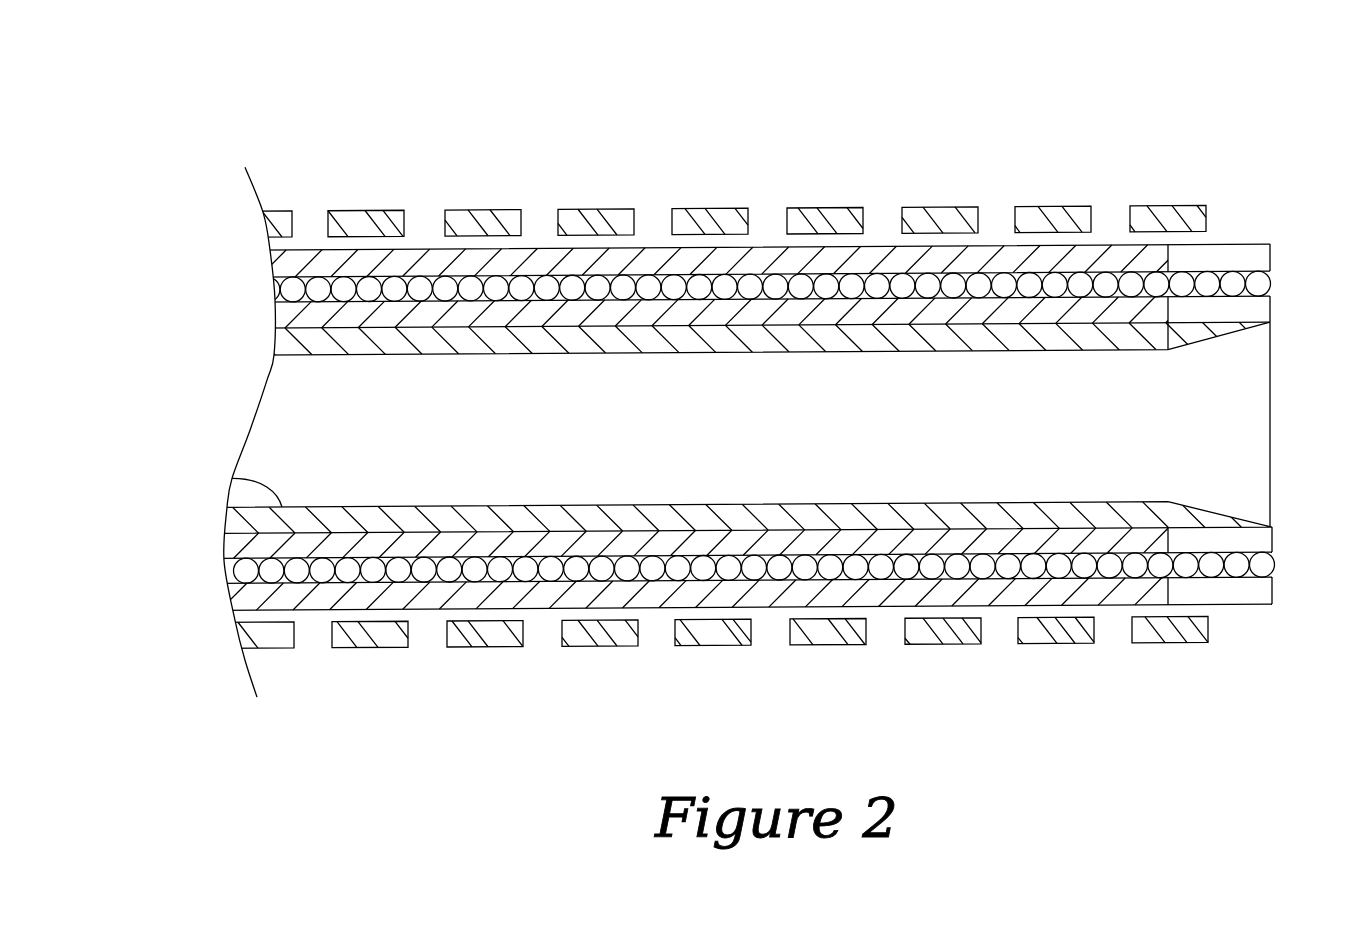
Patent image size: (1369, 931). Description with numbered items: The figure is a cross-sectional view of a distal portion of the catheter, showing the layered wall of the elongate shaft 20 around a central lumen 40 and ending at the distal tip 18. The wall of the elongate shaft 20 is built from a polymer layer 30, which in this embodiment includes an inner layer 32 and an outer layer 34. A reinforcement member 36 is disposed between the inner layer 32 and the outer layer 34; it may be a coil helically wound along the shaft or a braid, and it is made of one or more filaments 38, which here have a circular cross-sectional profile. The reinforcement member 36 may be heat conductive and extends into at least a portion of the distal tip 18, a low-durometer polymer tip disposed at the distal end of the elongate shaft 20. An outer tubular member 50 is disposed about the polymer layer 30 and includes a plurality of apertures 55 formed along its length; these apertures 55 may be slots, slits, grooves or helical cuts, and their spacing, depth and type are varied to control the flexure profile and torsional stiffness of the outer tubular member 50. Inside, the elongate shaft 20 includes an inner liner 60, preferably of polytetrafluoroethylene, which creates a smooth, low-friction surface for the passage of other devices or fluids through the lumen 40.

The distal tip 18 is at (1245, 264).
The elongate shaft 20 is at (785, 116).
The polymer layer 30 is at (303, 330).
The inner layer 32 is at (293, 315).
The outer layer 34 is at (288, 265).
The reinforcement member 36 is at (283, 293).
The filaments 38 is at (238, 573).
The lumen 40 is at (298, 431).
The outer tubular member 50 is at (353, 211).
The apertures 55 is at (425, 227).
The inner liner 60 is at (232, 478).